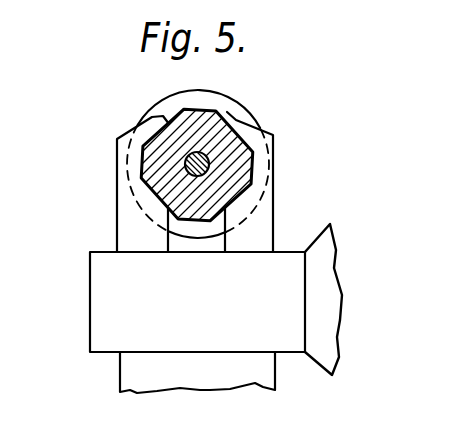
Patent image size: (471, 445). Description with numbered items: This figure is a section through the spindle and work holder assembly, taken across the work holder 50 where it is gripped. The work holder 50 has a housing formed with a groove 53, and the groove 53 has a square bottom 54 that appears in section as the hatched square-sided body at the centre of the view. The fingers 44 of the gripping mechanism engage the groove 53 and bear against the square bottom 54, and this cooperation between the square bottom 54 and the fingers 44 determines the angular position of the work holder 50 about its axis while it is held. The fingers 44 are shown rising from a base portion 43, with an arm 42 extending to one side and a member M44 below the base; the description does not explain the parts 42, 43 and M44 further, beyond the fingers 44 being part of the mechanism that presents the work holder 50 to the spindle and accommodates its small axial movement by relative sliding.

The arm 42 is at (327, 268).
The base block 43 is at (100, 278).
The fingers 44 is at (117, 146).
The work holder 50 is at (165, 107).
The groove 53 is at (180, 104).
The square bottom 54 is at (223, 116).
The mounting member M44 is at (135, 371).